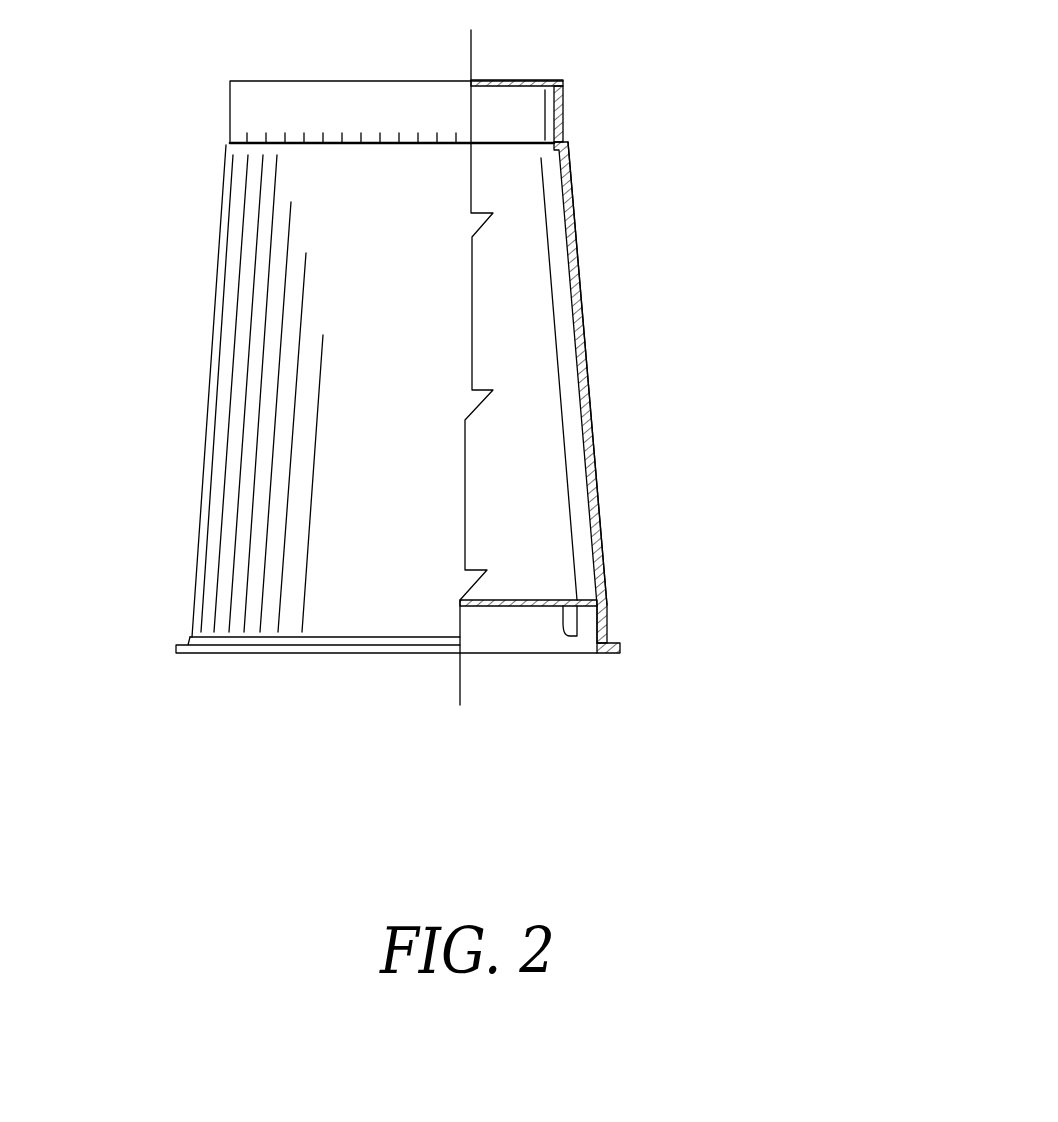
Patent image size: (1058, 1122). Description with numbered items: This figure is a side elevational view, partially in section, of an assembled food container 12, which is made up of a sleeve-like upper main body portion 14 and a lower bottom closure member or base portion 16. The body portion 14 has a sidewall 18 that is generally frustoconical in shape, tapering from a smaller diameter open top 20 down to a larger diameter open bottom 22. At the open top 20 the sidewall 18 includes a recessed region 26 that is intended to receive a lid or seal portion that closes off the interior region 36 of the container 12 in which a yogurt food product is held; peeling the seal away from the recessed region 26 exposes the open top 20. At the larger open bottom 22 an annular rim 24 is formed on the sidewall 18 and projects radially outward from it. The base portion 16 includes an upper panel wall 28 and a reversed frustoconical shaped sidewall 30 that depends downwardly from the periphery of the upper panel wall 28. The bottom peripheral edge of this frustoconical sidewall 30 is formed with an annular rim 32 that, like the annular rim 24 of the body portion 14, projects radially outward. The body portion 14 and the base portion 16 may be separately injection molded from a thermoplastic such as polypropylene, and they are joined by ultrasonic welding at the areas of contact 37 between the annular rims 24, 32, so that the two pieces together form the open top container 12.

The food container 12 is at (755, 282).
The upper main body portion 14 is at (600, 178).
The base portion 16 is at (625, 597).
The sidewall 18 is at (580, 370).
The open top 20 is at (550, 100).
The open bottom 22 is at (582, 503).
The annular rim 24 is at (183, 646).
The recessed region 26 is at (230, 100).
The upper panel wall 28 is at (496, 600).
The frustoconical sidewall 30 is at (603, 636).
The annular rim 32 is at (603, 655).
The interior region 36 is at (538, 361).
The areas of contact 37 is at (620, 646).